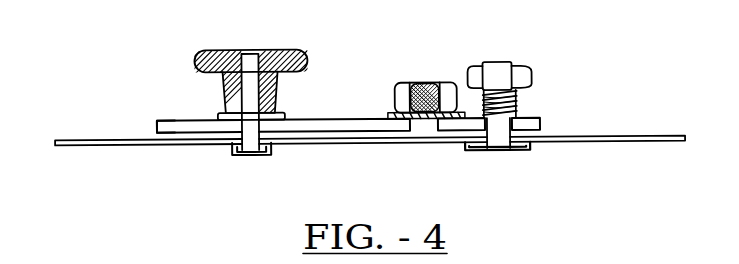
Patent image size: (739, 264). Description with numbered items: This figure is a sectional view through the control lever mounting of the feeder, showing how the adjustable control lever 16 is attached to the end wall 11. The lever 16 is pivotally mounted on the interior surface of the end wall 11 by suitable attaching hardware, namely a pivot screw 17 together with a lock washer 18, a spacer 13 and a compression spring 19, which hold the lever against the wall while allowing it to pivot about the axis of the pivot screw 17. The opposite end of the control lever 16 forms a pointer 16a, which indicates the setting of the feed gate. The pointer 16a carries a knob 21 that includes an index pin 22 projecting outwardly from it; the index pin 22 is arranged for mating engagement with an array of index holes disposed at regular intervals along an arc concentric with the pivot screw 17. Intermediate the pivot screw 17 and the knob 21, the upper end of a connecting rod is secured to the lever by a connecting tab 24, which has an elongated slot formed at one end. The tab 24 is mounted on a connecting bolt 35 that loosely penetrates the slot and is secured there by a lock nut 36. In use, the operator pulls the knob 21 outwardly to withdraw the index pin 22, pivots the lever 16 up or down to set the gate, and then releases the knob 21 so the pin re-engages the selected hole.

The end wall 11 is at (117, 145).
The spacer 13 is at (535, 134).
The adjustable control lever 16 is at (310, 93).
The pointer 16a is at (157, 119).
The pivot screw 17 is at (535, 78).
The lock washer 18 is at (537, 77).
The compression spring 19 is at (518, 110).
The knob 21 is at (212, 52).
The index pin 22 is at (255, 155).
The connecting tab 24 is at (462, 113).
The connecting bolt 35 is at (425, 82).
The lock nut 36 is at (416, 70).